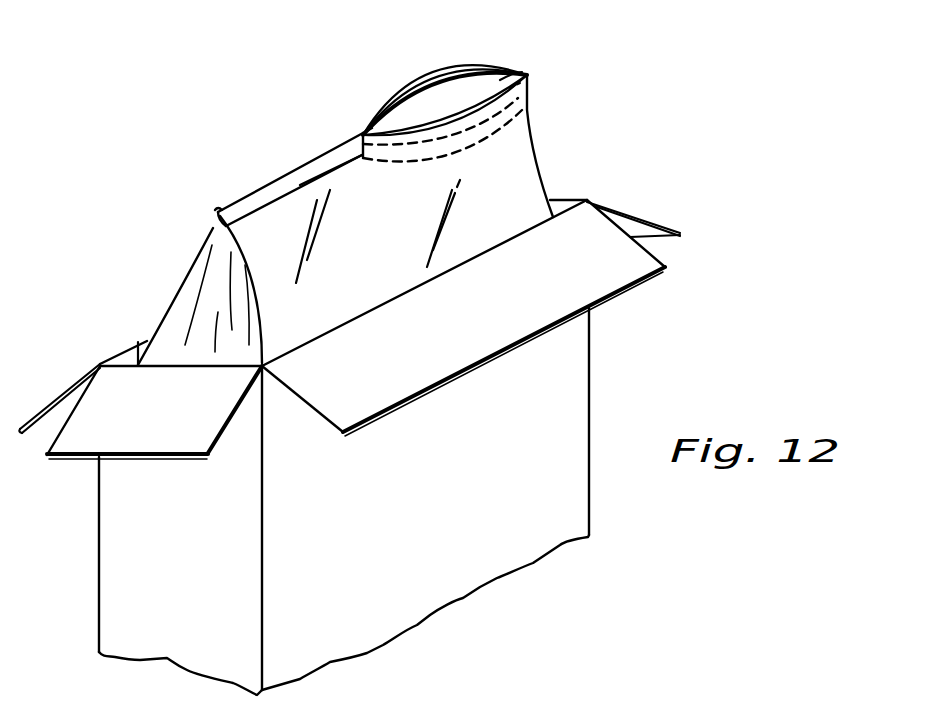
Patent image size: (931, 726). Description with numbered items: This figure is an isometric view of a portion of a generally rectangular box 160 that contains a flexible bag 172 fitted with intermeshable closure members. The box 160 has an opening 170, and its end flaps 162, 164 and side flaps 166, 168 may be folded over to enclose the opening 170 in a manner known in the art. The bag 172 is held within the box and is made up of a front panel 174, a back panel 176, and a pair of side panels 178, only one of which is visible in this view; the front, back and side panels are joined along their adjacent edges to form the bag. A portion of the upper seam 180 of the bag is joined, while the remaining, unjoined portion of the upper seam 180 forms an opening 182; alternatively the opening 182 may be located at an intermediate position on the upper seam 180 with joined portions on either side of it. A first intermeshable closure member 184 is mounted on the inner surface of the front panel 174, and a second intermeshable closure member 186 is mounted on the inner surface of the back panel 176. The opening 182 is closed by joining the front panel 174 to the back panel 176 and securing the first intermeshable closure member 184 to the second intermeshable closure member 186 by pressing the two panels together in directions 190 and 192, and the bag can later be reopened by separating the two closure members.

The box 160 is at (440, 591).
The end flap 162 is at (107, 436).
The end flap 164 is at (647, 218).
The side flap 166 is at (600, 283).
The side flap 168 is at (62, 395).
The opening 170 is at (132, 334).
The bag 172 is at (265, 170).
The front panel 174 is at (318, 266).
The back panel 176 is at (207, 240).
The side panel 178 is at (193, 300).
The upper seam 180 is at (300, 157).
The opening 182 is at (441, 115).
The first intermeshable closure member 184 is at (536, 104).
The second intermeshable closure member 186 is at (505, 78).
The direction 190 is at (470, 164).
The direction 192 is at (365, 106).